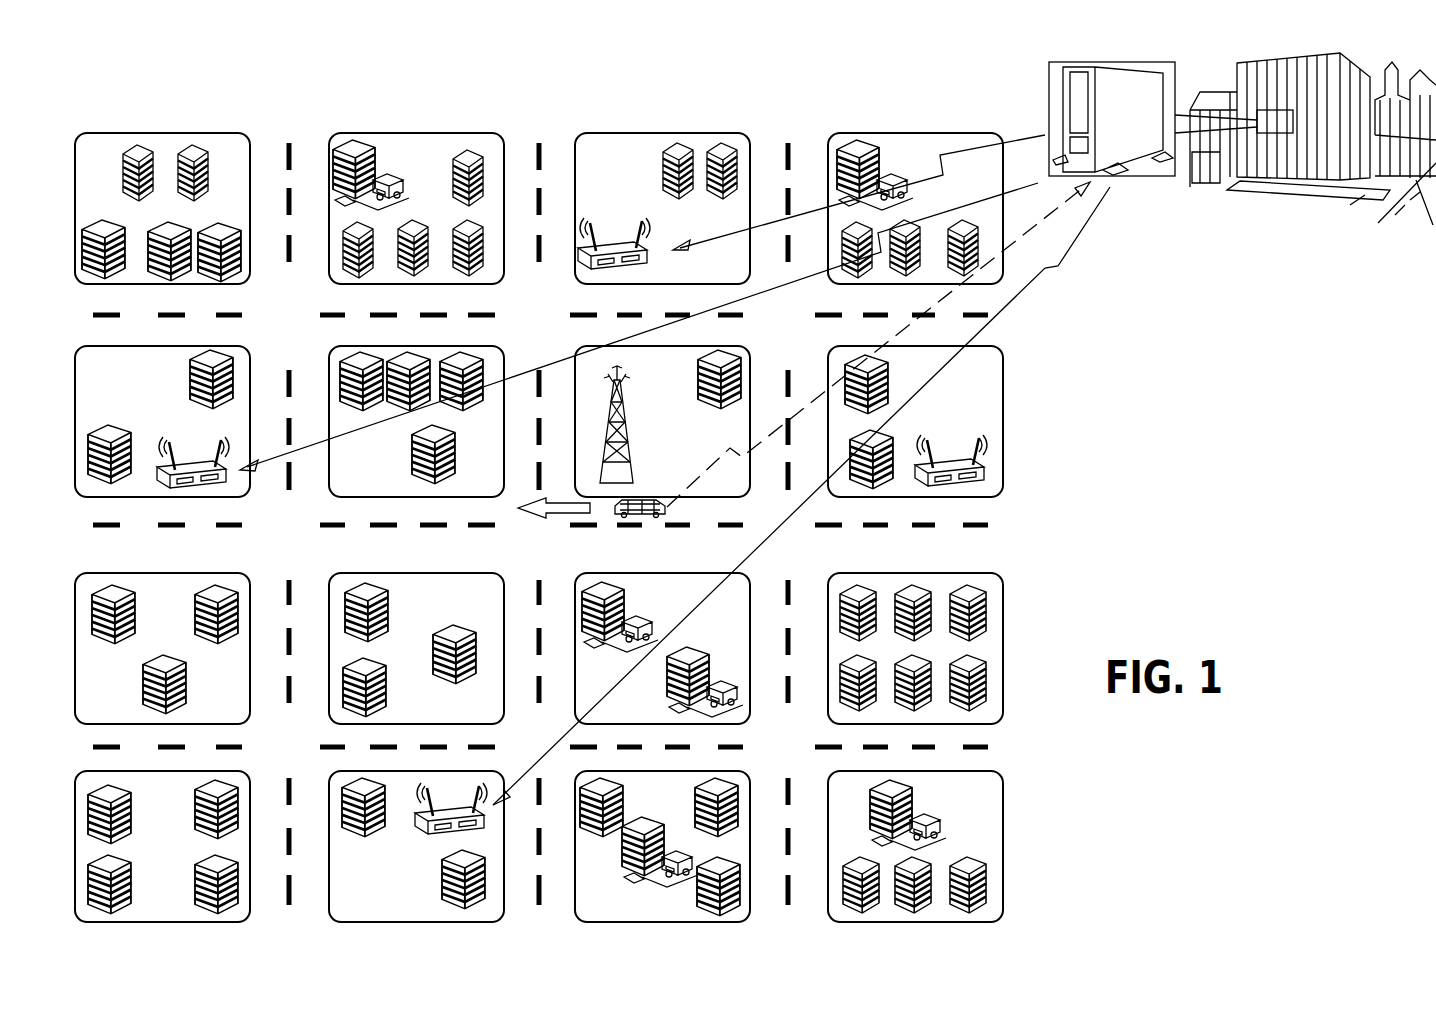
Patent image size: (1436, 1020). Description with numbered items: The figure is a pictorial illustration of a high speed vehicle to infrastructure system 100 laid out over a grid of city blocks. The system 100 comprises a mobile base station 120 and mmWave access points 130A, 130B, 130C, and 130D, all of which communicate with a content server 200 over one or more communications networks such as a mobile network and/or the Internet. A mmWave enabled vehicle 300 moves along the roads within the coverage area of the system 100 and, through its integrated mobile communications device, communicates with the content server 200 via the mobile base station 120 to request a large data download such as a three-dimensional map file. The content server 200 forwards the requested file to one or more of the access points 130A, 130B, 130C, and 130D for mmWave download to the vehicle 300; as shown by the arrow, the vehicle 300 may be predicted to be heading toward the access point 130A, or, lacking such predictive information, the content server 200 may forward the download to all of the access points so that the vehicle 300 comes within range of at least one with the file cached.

The high speed vehicle to infrastructure (V2I) system 100 is at (860, 89).
The mobile base station 120 is at (622, 395).
The mmWave access point 130A is at (160, 465).
The mmWave access point 130B is at (630, 243).
The mmWave access point 130C is at (422, 835).
The mmWave access point 130D is at (957, 458).
The content server 200 is at (1253, 63).
The mmWave enabled vehicle 300 is at (667, 517).